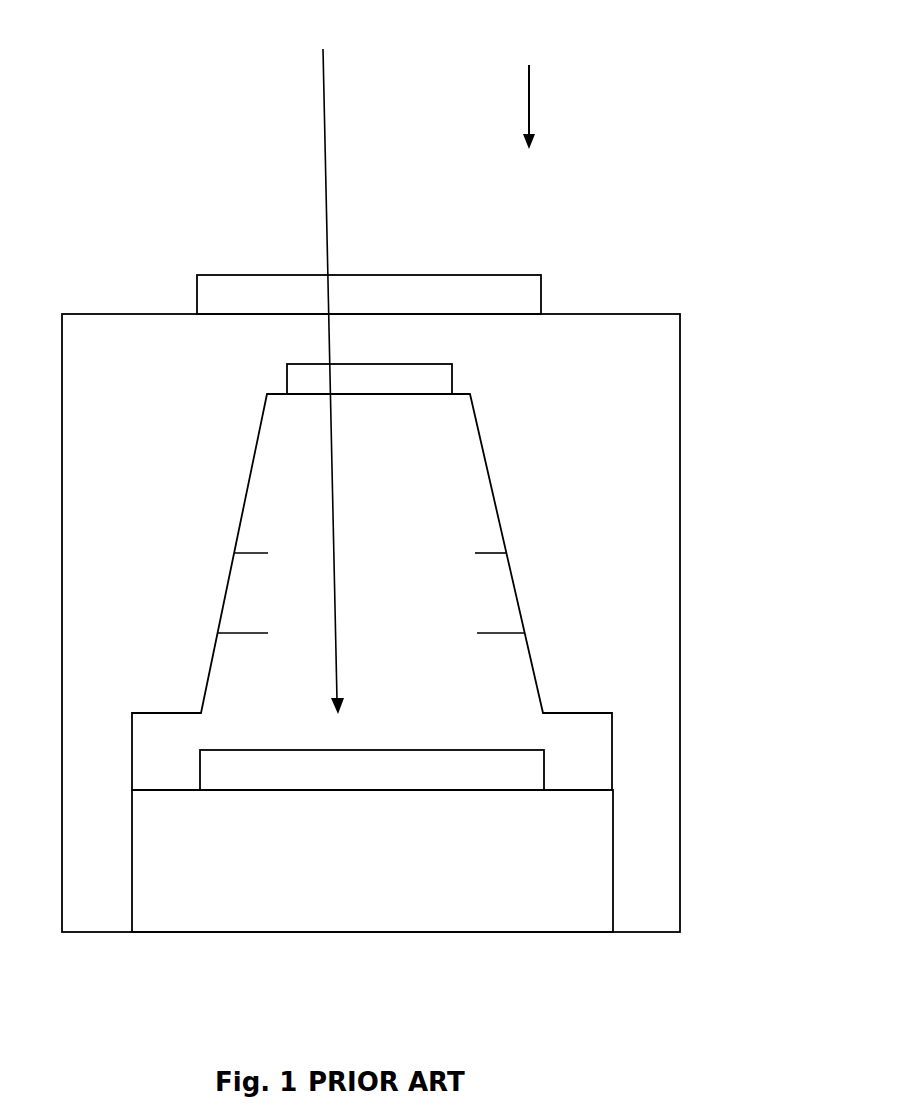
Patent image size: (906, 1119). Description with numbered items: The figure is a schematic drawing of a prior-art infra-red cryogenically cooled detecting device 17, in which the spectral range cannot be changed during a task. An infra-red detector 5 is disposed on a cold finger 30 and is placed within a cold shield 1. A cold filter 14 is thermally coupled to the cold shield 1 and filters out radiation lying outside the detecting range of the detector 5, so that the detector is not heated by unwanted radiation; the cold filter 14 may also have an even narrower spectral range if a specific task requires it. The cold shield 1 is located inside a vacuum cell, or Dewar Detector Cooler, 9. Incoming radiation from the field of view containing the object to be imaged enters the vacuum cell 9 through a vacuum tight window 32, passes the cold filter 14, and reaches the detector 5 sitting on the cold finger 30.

The cold shield 1 is at (497, 467).
The infra-red detector 5 is at (545, 770).
The vacuum cell (Dewar Detector Cooler) 9 is at (136, 314).
The cold filter 14 is at (455, 377).
The infra-red cryogenically cooled detecting device 17 is at (537, 80).
The cold finger 30 is at (558, 853).
The vacuum tight window 32 is at (542, 291).